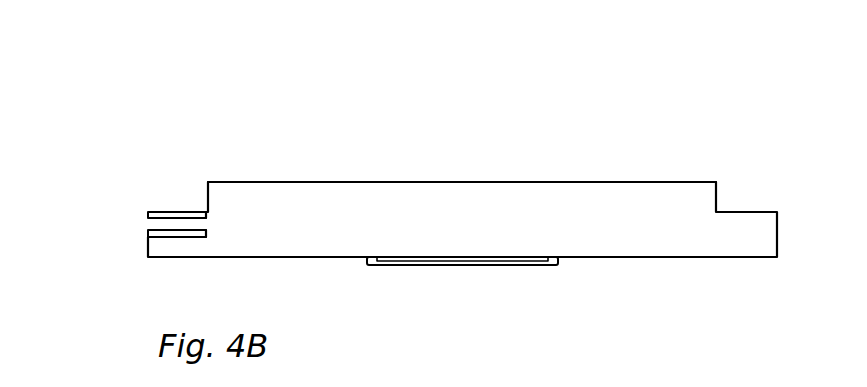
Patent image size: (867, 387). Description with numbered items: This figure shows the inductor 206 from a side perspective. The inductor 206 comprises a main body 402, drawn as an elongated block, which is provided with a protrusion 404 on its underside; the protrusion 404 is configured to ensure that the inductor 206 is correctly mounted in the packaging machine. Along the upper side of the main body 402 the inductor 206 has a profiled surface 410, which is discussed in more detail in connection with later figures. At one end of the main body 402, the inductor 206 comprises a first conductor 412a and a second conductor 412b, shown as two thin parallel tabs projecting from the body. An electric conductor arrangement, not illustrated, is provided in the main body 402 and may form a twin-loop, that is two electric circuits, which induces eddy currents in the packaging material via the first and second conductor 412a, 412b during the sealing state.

The inductor 206 is at (97, 131).
The main body 402 is at (408, 198).
The profiled surface 410 is at (543, 182).
The first conductor 412a is at (163, 212).
The second conductor 412b is at (172, 237).
The protrusion 404 is at (505, 267).